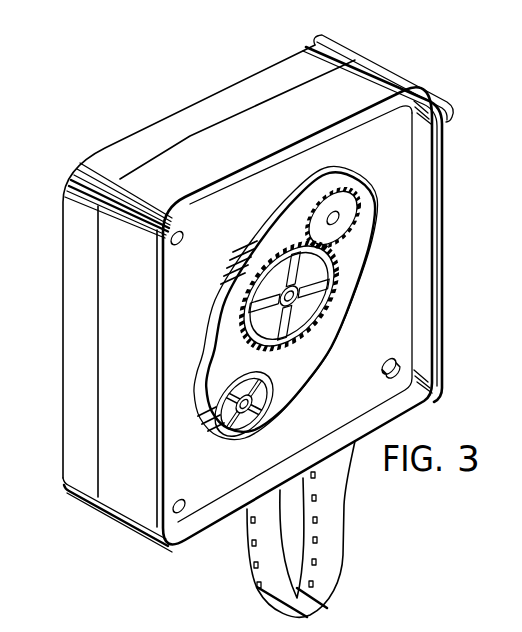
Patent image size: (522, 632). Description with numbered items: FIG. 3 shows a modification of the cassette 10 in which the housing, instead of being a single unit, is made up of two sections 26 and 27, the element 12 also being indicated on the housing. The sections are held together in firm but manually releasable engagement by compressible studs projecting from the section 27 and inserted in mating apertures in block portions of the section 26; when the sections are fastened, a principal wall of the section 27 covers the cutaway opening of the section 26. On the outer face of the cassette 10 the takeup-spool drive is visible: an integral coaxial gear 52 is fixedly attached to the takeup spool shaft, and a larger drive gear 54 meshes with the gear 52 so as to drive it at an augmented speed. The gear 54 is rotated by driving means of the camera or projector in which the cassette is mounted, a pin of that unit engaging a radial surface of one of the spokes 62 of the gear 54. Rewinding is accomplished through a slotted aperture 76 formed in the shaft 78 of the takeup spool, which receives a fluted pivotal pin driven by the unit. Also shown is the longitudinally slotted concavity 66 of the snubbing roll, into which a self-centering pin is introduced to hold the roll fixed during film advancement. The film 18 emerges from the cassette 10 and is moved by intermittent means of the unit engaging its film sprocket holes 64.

The cassette 10 is at (449, 207).
The cover 12 is at (380, 67).
The film 18 is at (343, 553).
The section 26 is at (133, 503).
The section 27 is at (88, 489).
The coaxial gear 52 is at (330, 207).
The drive gear 54 is at (312, 343).
The spokes 62 is at (326, 299).
The film sprocket holes 64 is at (320, 499).
The longitudinally slotted concavity 66 is at (409, 356).
The slotted aperture 76 is at (258, 412).
The shaft 78 is at (213, 431).